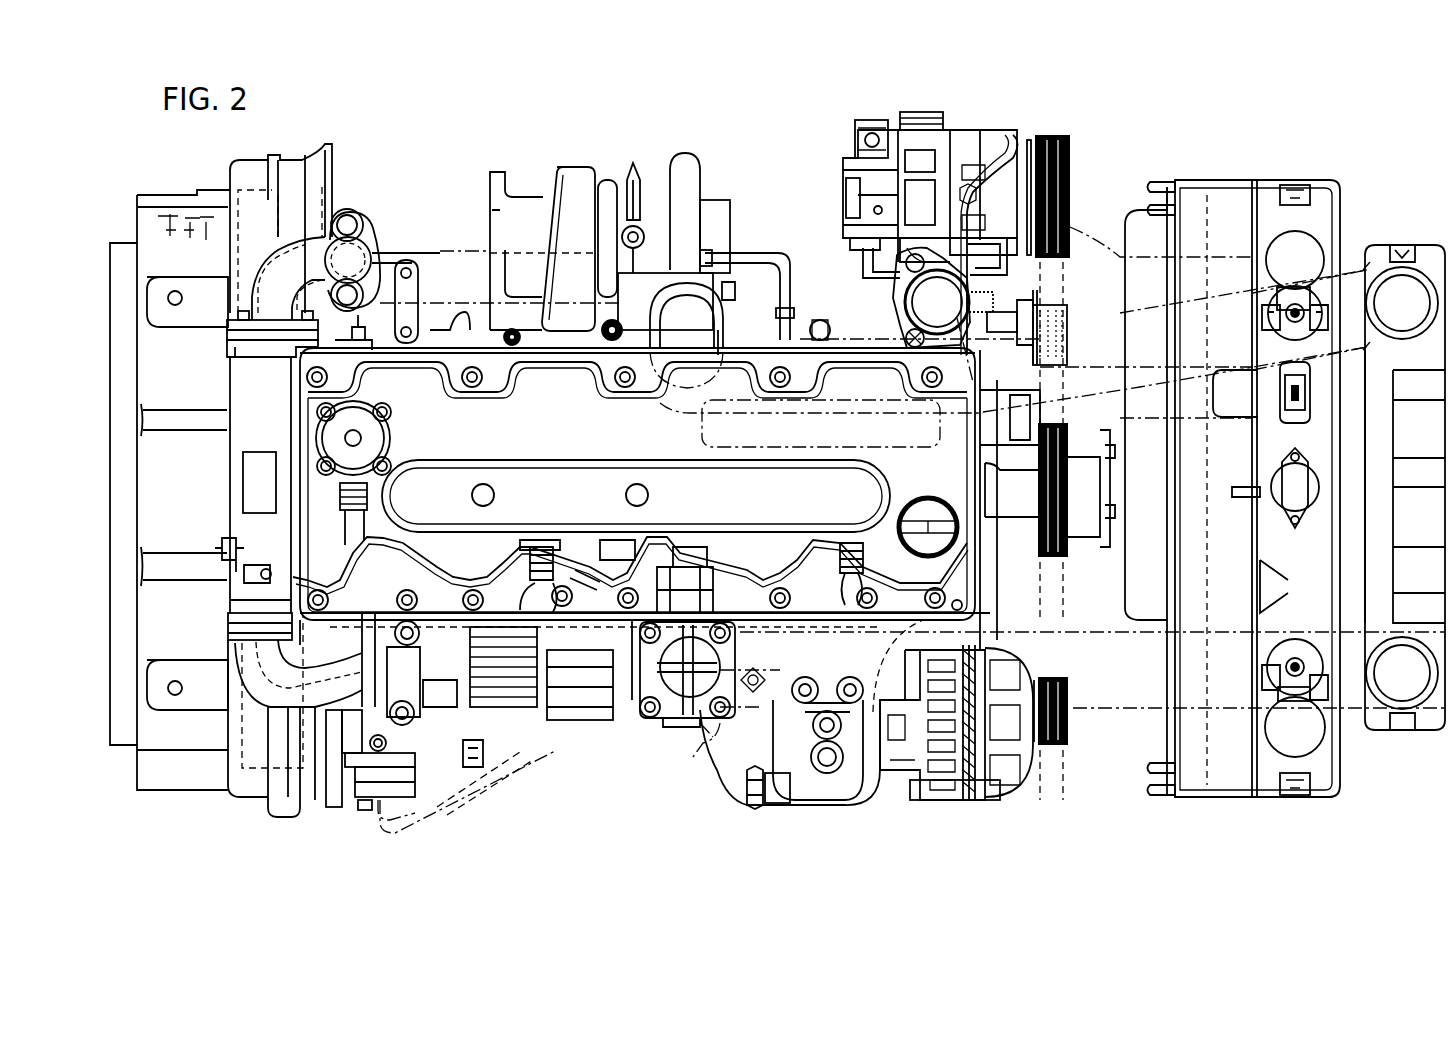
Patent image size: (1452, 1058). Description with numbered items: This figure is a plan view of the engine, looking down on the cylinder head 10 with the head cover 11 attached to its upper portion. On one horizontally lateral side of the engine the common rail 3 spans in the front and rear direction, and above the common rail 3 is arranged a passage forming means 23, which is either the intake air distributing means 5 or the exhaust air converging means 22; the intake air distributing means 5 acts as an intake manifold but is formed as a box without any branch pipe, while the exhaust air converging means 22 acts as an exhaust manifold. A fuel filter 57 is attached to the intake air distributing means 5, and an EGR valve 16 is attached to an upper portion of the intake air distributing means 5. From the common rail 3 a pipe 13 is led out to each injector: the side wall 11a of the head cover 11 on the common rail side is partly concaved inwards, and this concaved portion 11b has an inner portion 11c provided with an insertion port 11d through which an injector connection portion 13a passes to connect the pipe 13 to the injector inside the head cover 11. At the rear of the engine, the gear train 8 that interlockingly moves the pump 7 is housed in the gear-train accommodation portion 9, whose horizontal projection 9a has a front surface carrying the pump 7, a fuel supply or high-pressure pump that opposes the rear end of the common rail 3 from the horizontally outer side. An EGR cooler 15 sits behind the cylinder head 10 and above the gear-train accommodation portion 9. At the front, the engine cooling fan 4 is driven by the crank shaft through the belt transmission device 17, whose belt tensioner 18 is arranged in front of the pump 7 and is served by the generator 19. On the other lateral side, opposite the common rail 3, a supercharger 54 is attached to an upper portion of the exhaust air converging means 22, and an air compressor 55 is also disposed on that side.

The common rail 3 is at (583, 647).
The engine cooling fan 4 is at (1147, 237).
The intake air distributing means 5 is at (897, 645).
The passage forming means 23 is at (1010, 453).
The pump 7 is at (480, 753).
The gear train 8 is at (222, 655).
The gear-train accommodation portion 9 is at (227, 722).
The horizontal projection 9a is at (237, 743).
The cylinder head 10 is at (442, 353).
The head cover 11 is at (522, 447).
The side wall 11a is at (640, 562).
The concaved portion 11b is at (557, 562).
The inner portion 11c is at (548, 567).
The insertion port 11d is at (528, 545).
The pipe 13 is at (530, 573).
The injector connection portion 13a is at (541, 565).
The EGR cooler 15 is at (257, 432).
The EGR valve 16 is at (497, 635).
The belt transmission device 17 is at (1060, 747).
The belt tensioner 18 is at (912, 675).
The generator 19 is at (957, 712).
The exhaust air converging means 22 is at (813, 310).
The supercharger 54 is at (685, 213).
The air compressor 55 is at (858, 194).
The fuel filter 57 is at (773, 750).